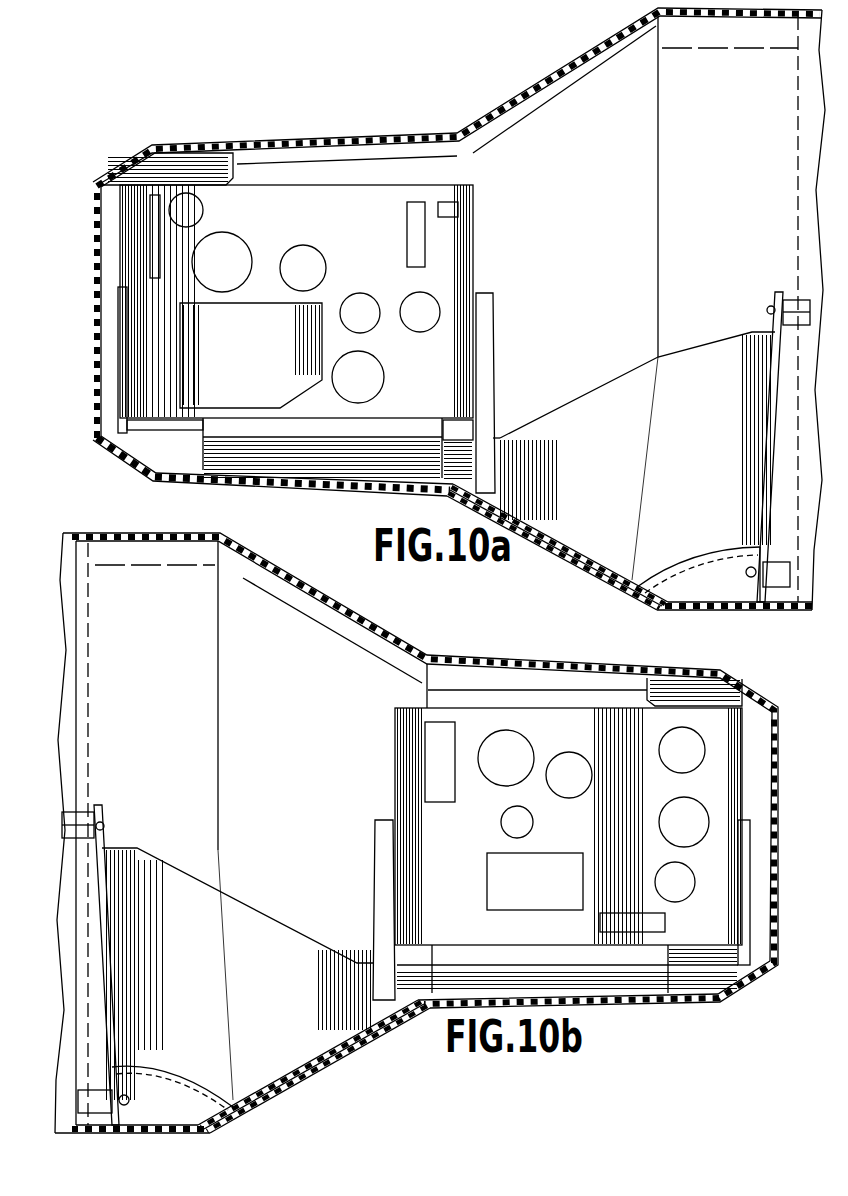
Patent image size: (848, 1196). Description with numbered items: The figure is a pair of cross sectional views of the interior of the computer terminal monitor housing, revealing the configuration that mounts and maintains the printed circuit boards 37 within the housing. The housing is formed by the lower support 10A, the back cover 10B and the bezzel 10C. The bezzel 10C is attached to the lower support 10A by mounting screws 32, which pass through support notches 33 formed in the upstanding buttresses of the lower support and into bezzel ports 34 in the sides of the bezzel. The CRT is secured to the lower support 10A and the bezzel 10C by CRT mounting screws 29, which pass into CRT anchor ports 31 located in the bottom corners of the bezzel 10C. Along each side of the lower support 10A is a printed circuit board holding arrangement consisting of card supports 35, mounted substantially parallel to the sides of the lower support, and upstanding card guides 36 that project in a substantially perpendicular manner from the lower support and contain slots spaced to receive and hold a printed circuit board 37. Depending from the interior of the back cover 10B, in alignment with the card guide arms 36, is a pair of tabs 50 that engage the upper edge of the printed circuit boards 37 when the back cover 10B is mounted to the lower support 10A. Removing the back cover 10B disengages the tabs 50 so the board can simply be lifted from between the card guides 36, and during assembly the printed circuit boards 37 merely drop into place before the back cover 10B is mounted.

In FIG. 10a, the lower support 10A is at (268, 480).
In FIG. 10b, the lower support 10A is at (620, 998).
In FIG. 10a, the back cover 10B is at (297, 142).
In FIG. 10b, the back cover 10B is at (486, 658).
In FIG. 10a, the bezzel 10C is at (780, 465).
In FIG. 10b, the bezzel 10C is at (73, 976).
In FIG. 10a, the CRT mounting screws 29 is at (747, 572).
In FIG. 10a, the CRT anchor ports 31 is at (776, 560).
In FIG. 10a, the mounting screws 32 is at (769, 308).
In FIG. 10b, the mounting screws 32 is at (104, 828).
In FIG. 10a, the support notches 33 is at (779, 298).
In FIG. 10b, the support notches 33 is at (92, 815).
In FIG. 10a, the bezzel ports 34 is at (796, 300).
In FIG. 10b, the bezzel ports 34 is at (70, 812).
In FIG. 10a, the card supports 35 is at (313, 453).
In FIG. 10b, the card supports 35 is at (540, 978).
In FIG. 10a, the card guides 36 is at (120, 355).
In FIG. 10b, the card guides 36 is at (377, 845).
In FIG. 10a, the printed circuit boards 37 is at (453, 267).
In FIG. 10b, the printed circuit boards 37 is at (407, 795).
In FIG. 10a, the tabs 50 is at (181, 163).
In FIG. 10b, the tabs 50 is at (675, 676).